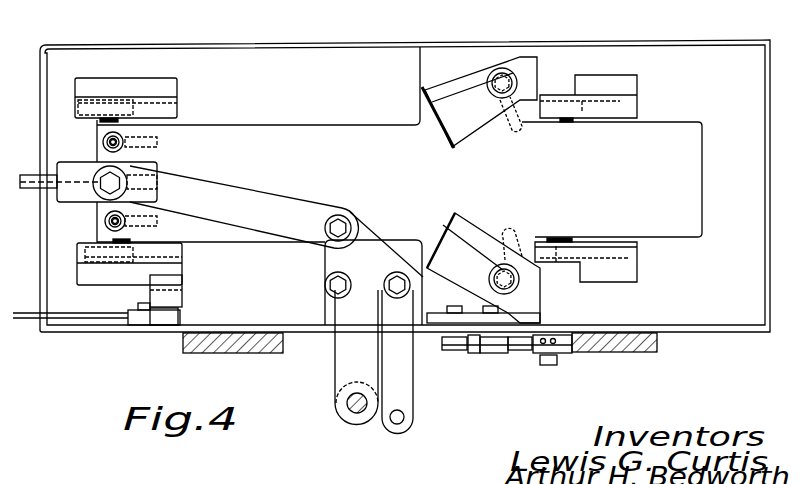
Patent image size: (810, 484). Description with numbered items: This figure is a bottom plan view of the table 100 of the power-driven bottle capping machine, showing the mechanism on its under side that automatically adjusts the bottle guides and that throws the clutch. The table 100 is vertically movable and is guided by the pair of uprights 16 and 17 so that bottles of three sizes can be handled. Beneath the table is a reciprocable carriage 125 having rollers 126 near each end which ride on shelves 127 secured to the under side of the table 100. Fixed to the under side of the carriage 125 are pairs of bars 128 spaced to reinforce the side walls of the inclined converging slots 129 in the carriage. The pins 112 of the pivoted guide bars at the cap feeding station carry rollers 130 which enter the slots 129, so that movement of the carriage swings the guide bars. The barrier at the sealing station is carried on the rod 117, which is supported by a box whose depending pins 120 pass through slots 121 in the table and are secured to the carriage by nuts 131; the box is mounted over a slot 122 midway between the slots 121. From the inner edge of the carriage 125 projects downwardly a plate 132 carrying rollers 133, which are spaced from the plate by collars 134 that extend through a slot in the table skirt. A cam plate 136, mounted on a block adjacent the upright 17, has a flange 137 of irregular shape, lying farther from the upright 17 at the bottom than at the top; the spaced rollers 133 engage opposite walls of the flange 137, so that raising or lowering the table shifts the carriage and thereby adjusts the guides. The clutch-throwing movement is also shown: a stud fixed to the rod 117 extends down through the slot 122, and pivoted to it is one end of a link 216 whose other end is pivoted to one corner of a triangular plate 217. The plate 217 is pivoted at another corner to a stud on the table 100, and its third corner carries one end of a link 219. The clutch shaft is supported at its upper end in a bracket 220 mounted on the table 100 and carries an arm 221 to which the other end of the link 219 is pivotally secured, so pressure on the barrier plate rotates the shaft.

The upright 16 is at (207, 355).
The upright 17 is at (657, 345).
The table 100 is at (405, 186).
The pin 112 is at (510, 76).
The rod 117 is at (27, 189).
The pins 120 is at (127, 142).
The slots 121 is at (160, 153).
The slot 122 is at (82, 198).
The reciprocable carriage 125 is at (373, 249).
The rollers 126 is at (73, 110).
The shelves 127 is at (123, 86).
The bars 128 is at (440, 85).
The inclined converging slots 129 is at (442, 136).
The rollers 130 is at (520, 82).
The nuts 131 is at (122, 140).
The plate 132 is at (428, 330).
The rollers 133 is at (445, 357).
The collars 134 is at (438, 340).
The cam plate 136 is at (572, 355).
The flange 137 is at (470, 353).
The link 216 is at (244, 205).
The triangular plate 217 is at (338, 256).
The link 219 is at (407, 383).
The bracket 220 is at (343, 363).
The arm 221 is at (372, 427).